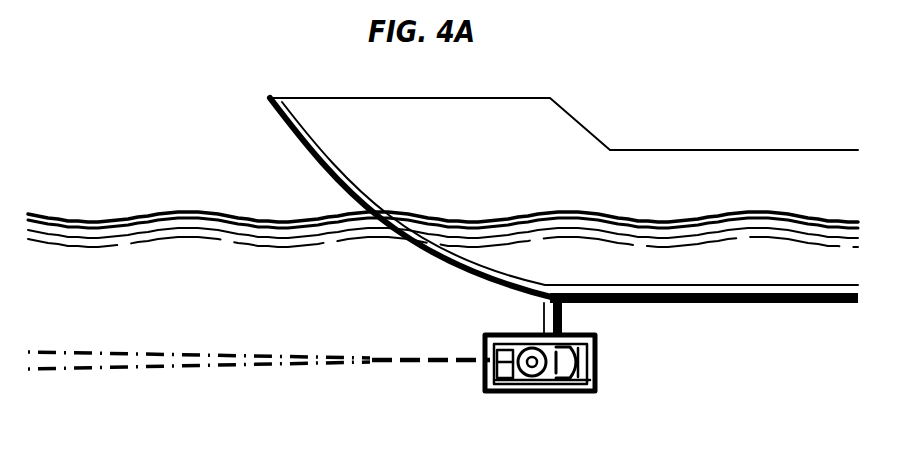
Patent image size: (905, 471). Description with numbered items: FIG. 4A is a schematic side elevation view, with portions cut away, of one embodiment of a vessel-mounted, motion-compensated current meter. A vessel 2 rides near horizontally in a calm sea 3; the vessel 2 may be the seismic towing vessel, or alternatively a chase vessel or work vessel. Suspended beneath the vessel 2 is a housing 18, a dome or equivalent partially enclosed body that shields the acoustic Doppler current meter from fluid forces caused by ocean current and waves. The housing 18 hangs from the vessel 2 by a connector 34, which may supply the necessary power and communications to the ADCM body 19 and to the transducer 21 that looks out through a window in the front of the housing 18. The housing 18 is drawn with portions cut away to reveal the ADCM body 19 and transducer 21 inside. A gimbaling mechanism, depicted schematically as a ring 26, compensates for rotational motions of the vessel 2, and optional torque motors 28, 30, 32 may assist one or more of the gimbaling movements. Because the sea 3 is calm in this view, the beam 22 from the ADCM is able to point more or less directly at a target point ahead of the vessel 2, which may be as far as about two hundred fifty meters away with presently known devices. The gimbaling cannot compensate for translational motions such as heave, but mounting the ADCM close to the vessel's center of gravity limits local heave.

The vessel 2 is at (769, 150).
The calm sea 3 is at (147, 218).
The housing 18 is at (597, 348).
The ADCM body 19 is at (493, 392).
The transducer 21 is at (483, 333).
The beam 22 is at (150, 370).
The ring 26 is at (521, 393).
The torque motor 28 is at (560, 393).
The torque motor 30 is at (594, 400).
The torque motor 32 is at (622, 398).
The connector 34 is at (563, 310).